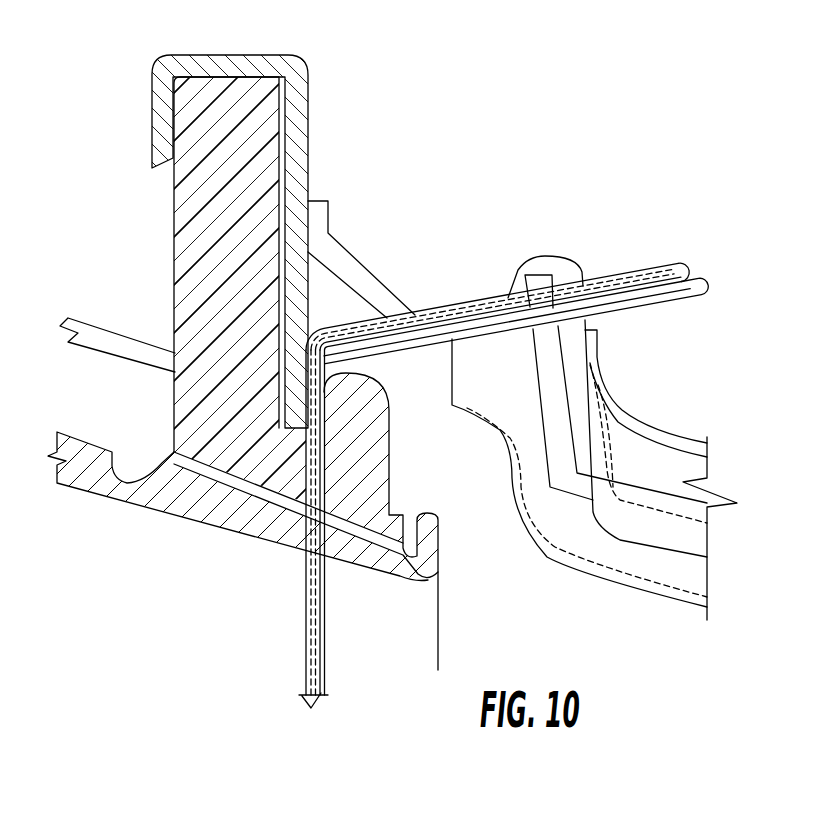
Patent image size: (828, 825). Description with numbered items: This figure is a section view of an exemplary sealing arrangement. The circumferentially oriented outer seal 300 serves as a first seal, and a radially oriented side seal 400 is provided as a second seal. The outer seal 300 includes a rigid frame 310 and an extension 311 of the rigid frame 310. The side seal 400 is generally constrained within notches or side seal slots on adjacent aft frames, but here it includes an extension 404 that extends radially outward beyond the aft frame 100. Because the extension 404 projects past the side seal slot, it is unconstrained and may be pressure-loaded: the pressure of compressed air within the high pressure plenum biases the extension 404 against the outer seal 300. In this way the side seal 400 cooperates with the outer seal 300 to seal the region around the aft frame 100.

The aft frame 100 is at (174, 224).
The rigid frame 310 is at (310, 147).
The extension of the rigid frame 311 is at (342, 258).
The extension 404 is at (442, 308).
The outer seal 300 is at (623, 308).
The side seal 400 is at (310, 629).